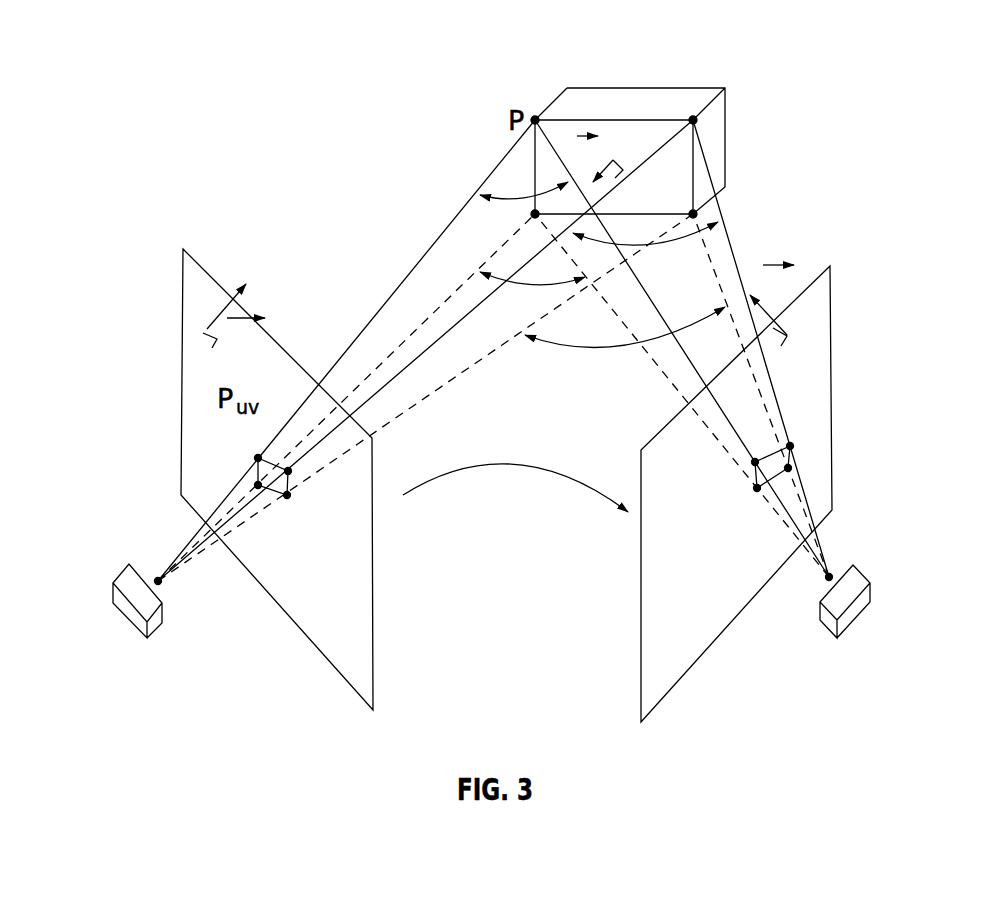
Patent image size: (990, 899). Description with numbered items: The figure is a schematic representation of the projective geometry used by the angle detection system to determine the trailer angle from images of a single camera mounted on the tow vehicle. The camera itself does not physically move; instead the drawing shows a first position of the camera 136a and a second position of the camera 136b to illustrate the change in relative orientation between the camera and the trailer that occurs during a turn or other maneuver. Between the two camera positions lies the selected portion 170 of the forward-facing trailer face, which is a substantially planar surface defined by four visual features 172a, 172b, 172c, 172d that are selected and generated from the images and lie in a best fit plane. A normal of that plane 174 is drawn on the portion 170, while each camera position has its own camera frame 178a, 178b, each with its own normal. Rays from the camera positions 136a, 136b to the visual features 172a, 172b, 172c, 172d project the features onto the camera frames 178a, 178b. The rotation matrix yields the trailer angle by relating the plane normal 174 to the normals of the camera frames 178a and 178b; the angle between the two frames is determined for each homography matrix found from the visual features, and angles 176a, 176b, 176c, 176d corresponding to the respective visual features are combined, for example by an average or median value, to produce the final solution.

The first position of the camera 136a is at (128, 608).
The second position of the camera 136b is at (860, 605).
The portion of the trailer face 170 is at (679, 168).
The visual feature 172a is at (526, 214).
The visual feature 172b is at (700, 213).
The visual feature 172c is at (533, 117).
The visual feature 172d is at (692, 117).
The normal of the plane 174 is at (236, 280).
The angle 176a is at (533, 285).
The angle 176b is at (587, 350).
The angle 176c is at (505, 194).
The angle 176d is at (667, 246).
The camera frame 178a is at (355, 578).
The camera frame 178b is at (823, 431).